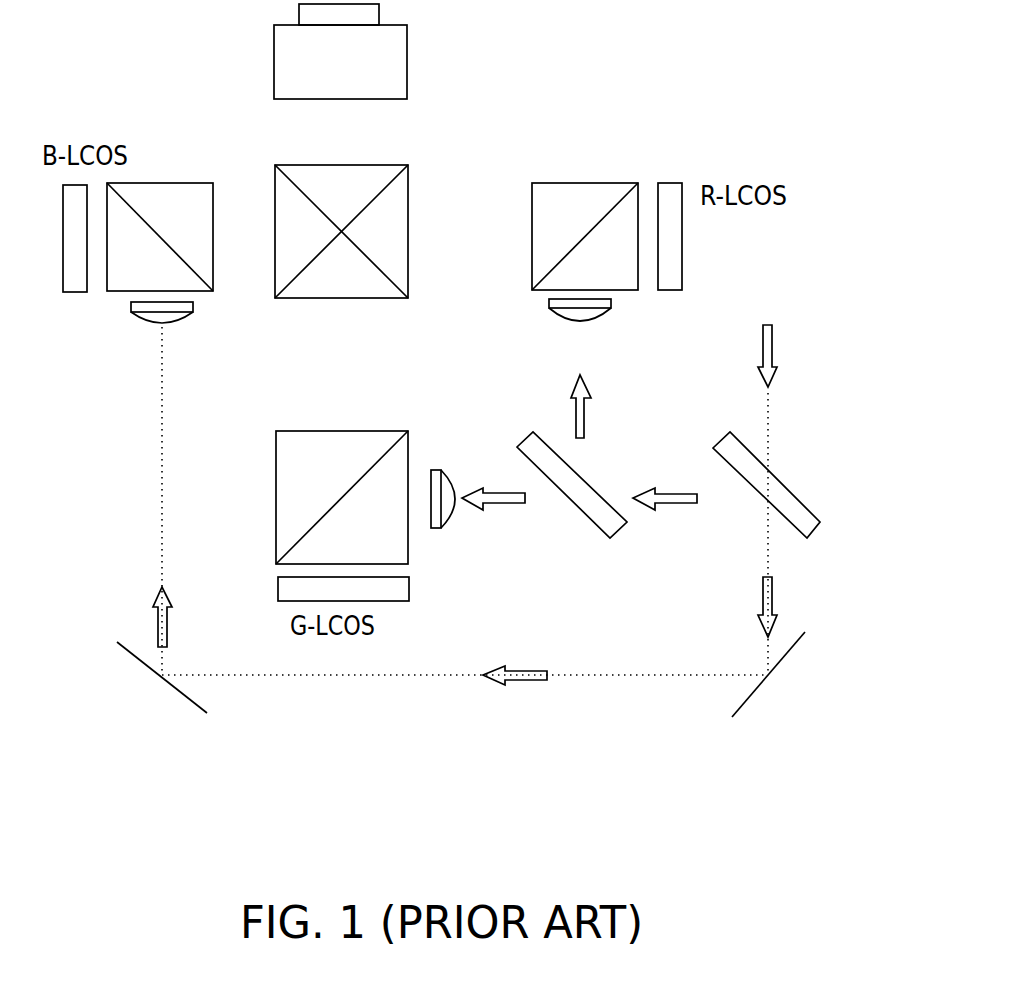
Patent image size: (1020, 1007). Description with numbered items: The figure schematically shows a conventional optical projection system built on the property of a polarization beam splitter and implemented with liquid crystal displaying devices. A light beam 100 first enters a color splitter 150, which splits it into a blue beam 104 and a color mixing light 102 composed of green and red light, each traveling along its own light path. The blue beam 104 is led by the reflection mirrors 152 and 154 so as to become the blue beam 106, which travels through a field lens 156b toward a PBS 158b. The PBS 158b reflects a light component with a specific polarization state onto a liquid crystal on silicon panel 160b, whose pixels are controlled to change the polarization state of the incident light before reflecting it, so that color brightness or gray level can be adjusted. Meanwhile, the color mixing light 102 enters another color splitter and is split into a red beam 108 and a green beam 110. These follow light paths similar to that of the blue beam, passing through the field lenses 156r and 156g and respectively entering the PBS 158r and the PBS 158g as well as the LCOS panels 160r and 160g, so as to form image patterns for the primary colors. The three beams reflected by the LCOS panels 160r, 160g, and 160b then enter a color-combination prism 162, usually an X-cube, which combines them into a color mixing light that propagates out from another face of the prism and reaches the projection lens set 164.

The light beam 100 is at (772, 345).
The color mixing light 102 is at (670, 493).
The blue beam 104 is at (773, 595).
The blue beam 106 is at (158, 625).
The red beam 108 is at (585, 410).
The green beam 110 is at (507, 503).
The color splitter 150 is at (770, 470).
The reflection mirror 152 is at (768, 680).
The reflection mirror 154 is at (148, 668).
The field lens 156b is at (166, 316).
The field lens 156g is at (445, 470).
The field lens 156r is at (611, 305).
The PBS 158b is at (153, 183).
The PBS 158g is at (276, 498).
The PBS 158r is at (568, 183).
The LCOS panel 160b is at (79, 292).
The LCOS panel 160g is at (409, 588).
The LCOS panel 160r is at (670, 183).
The color-combination prism 162 is at (358, 165).
The projection lens set 164 is at (407, 60).